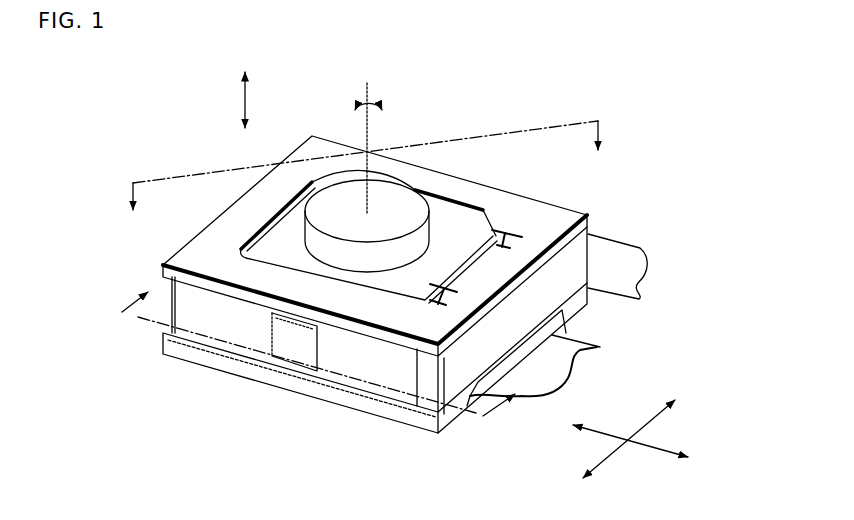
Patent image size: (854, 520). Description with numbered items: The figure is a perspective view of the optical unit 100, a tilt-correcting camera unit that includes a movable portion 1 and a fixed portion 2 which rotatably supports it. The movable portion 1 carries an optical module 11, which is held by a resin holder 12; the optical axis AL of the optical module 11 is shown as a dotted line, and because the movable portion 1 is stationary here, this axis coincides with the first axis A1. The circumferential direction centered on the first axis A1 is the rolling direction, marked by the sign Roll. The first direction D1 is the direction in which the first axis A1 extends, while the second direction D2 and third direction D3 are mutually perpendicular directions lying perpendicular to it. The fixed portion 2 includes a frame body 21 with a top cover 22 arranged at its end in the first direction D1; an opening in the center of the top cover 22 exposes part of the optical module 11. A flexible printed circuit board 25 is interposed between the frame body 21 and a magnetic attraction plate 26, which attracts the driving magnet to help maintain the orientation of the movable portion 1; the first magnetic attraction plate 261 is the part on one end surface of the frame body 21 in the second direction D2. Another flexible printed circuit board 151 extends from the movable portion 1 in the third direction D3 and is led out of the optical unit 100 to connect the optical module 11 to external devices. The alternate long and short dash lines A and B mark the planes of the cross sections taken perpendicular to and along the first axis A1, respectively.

The optical unit 100 is at (176, 138).
The movable portion 1 is at (447, 222).
The optical module 11 is at (405, 202).
The holder 12 is at (500, 246).
The fixed portion 2 is at (196, 368).
The frame body 21 is at (187, 298).
The top cover 22 is at (186, 256).
The flexible printed circuit board 25 is at (615, 248).
The magnetic attraction plate 26 is at (300, 348).
The first magnetic attraction plate 261 is at (284, 347).
The flexible printed circuit board 151 is at (565, 336).
The optical axis AL is at (372, 136).
The first axis A1 is at (366, 129).
The rolling direction Roll is at (354, 98).
The first direction D1 is at (233, 104).
The second direction D2 is at (612, 455).
The third direction D3 is at (608, 430).
The line A- A is at (309, 363).
The line B- B is at (370, 162).